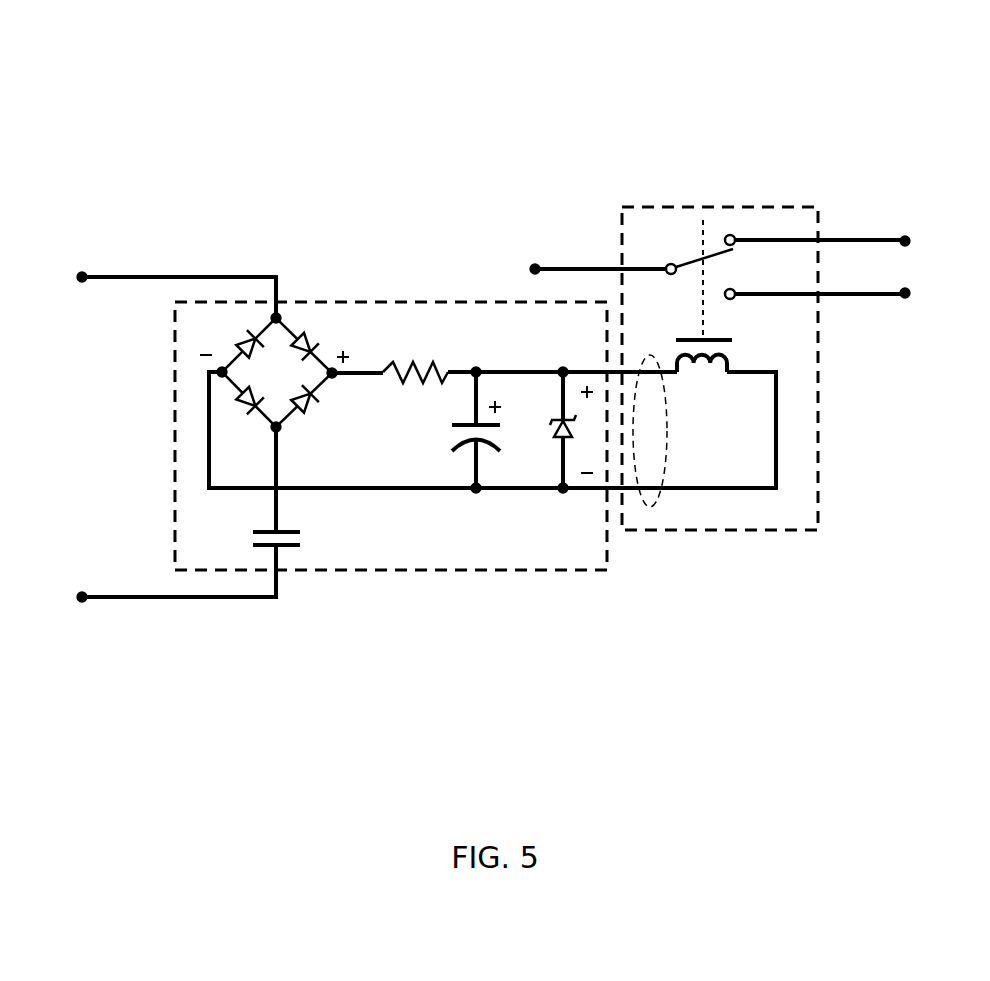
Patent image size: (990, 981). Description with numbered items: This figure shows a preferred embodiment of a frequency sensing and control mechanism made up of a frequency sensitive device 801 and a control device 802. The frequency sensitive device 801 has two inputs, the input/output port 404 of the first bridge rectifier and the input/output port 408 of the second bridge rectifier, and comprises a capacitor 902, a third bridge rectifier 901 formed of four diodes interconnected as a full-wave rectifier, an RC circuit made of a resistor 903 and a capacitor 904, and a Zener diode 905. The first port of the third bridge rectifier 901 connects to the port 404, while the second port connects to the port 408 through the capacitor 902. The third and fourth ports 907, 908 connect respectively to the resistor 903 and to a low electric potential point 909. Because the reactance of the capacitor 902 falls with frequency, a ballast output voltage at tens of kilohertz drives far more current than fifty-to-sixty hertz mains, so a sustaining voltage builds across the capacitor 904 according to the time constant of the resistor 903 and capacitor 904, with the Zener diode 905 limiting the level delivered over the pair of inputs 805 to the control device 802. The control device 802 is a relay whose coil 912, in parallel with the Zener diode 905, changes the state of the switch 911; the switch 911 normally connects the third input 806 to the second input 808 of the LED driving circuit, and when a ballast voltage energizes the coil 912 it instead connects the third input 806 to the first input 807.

The input/output port of the first bridge rectifier 404 is at (80, 284).
The input/output port of the second bridge rectifier 408 is at (80, 590).
The frequency sensitive device 801 is at (193, 302).
The control device 802 is at (653, 205).
The pair of inputs 805 is at (652, 506).
The third input 806 is at (532, 262).
The first input of the LED driving circuit 807 is at (908, 302).
The second input of the LED driving circuit 808 is at (906, 234).
The third bridge rectifier 901 is at (298, 424).
The capacitor 902 is at (265, 557).
The resistor 903 is at (413, 358).
The capacitor 904 is at (466, 445).
The Zener diode 905 is at (556, 445).
The third input/output port 907 is at (334, 380).
The fourth input/output port 908 is at (218, 376).
The low electric potential point 909 is at (568, 491).
The switch 911 is at (713, 250).
The coil 912 is at (708, 373).